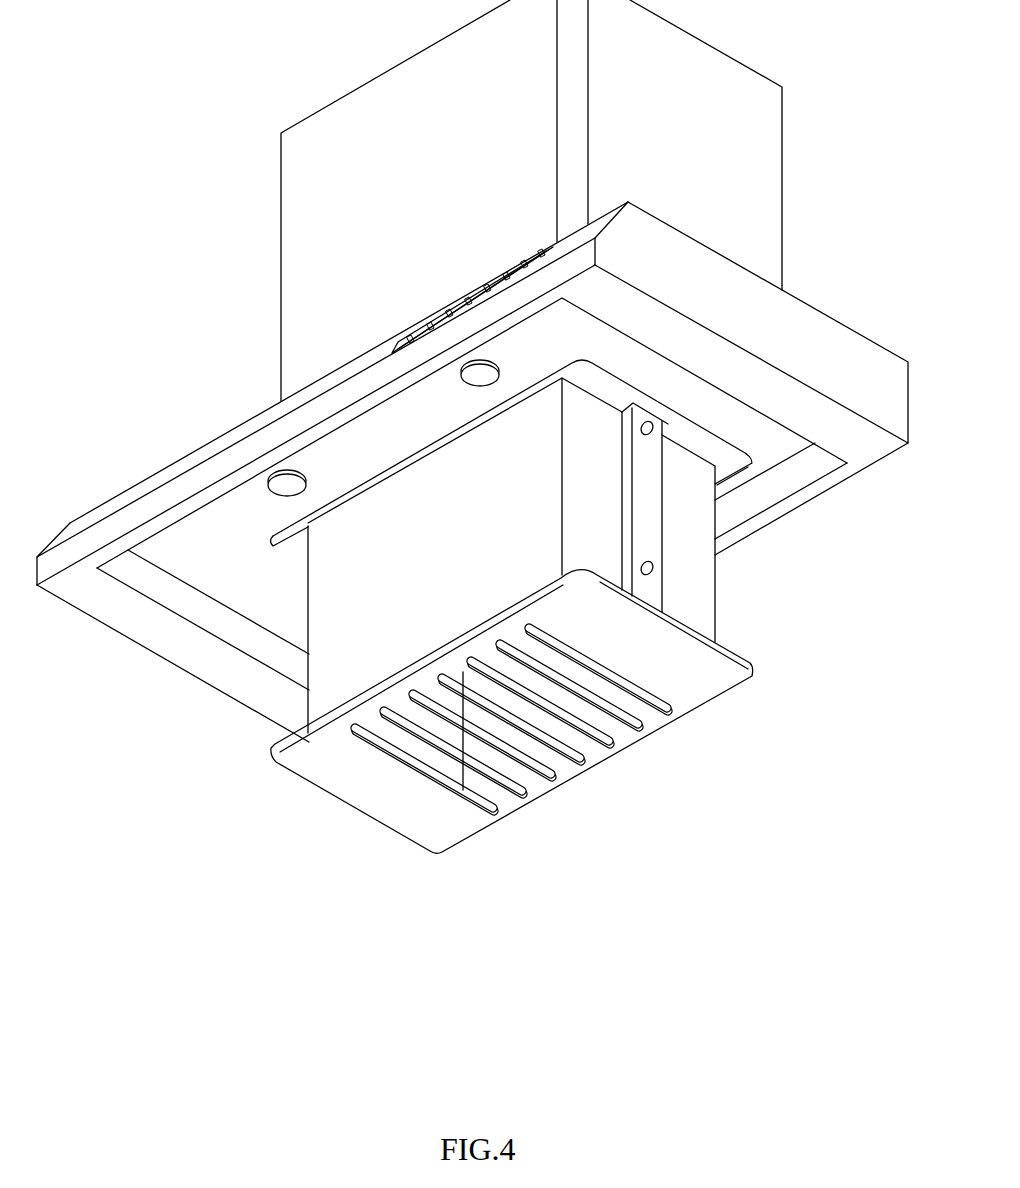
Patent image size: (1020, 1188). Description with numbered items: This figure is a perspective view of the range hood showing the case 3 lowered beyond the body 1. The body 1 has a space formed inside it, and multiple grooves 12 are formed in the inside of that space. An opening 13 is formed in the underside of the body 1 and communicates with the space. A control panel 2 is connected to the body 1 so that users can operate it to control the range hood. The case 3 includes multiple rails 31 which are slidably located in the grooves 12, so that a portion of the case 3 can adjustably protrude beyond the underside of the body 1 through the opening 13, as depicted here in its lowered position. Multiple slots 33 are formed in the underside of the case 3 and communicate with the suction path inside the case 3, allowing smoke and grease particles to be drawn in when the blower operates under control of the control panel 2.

The body 1 is at (472, 371).
The control panel 2 is at (421, 320).
The case 3 is at (519, 560).
The grooves 12 is at (642, 404).
The opening 13 is at (352, 500).
The rails 31 is at (771, 417).
The slots 33 is at (422, 756).